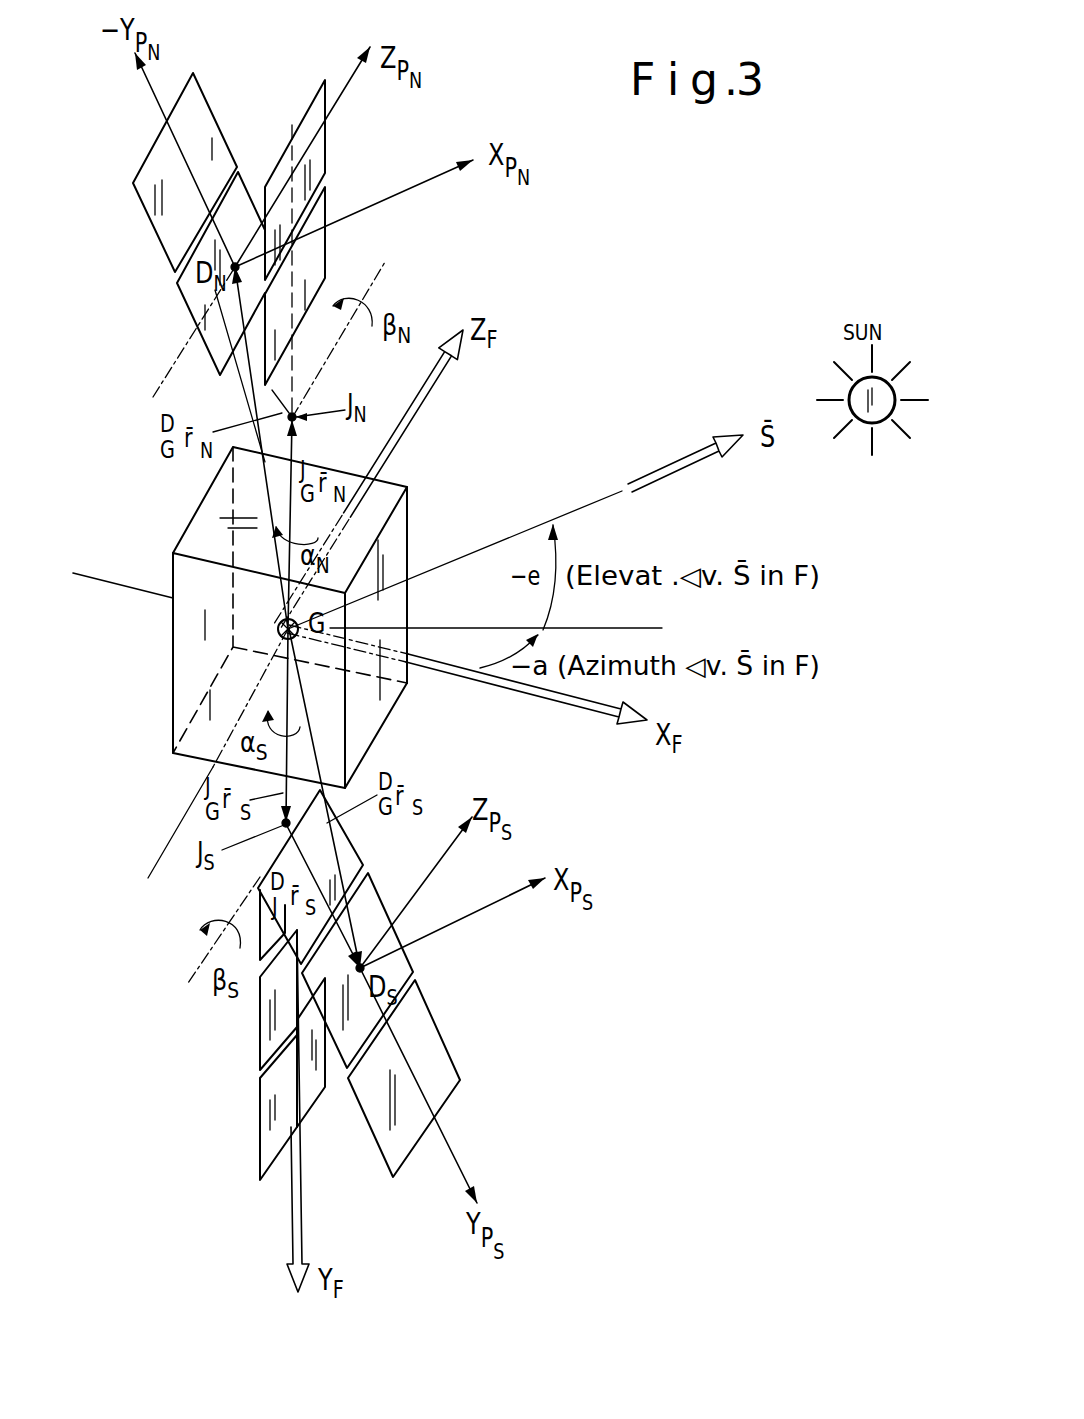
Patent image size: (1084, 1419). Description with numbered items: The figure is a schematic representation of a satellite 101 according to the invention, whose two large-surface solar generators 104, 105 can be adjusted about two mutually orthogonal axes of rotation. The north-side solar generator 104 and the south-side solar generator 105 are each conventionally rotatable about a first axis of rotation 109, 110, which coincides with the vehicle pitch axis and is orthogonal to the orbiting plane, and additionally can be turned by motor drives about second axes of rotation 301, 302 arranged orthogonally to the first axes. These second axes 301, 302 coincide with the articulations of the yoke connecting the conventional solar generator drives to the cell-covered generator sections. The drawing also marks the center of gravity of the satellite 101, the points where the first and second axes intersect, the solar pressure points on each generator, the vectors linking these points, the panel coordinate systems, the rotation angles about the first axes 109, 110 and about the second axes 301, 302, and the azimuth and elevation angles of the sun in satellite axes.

The satellite 101 is at (173, 655).
The solar generator 104 is at (162, 294).
The solar generator 105 is at (244, 1105).
The first axis of rotation 109 is at (407, 488).
The first axis of rotation 110 is at (280, 690).
The second axis of rotation 301 is at (376, 266).
The second axis of rotation 302 is at (202, 963).